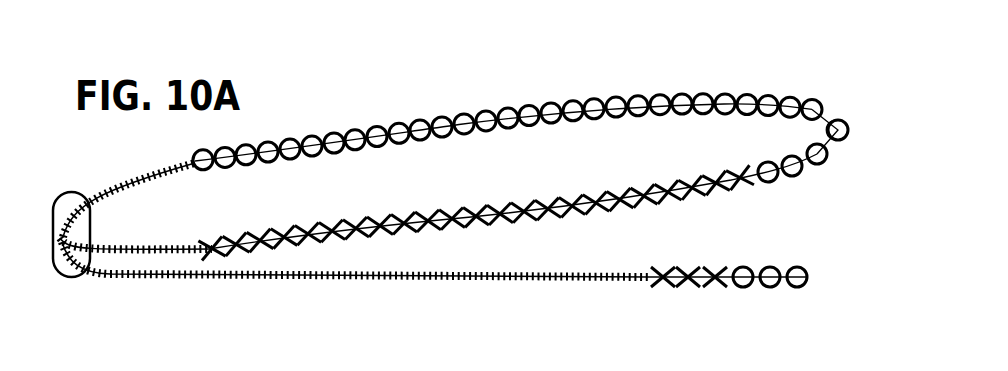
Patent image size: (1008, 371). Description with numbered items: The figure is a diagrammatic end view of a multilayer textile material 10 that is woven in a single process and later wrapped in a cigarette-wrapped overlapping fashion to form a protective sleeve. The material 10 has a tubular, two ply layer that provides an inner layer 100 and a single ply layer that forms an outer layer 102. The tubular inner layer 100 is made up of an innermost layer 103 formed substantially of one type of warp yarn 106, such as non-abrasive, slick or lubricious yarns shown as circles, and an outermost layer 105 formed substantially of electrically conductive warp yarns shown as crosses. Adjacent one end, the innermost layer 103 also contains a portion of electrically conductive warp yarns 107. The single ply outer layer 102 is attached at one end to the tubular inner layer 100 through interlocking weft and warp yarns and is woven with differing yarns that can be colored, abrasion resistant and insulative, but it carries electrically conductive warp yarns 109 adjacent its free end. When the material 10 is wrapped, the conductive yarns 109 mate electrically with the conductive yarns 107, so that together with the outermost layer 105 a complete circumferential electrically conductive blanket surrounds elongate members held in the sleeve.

The textile material 10 is at (845, 96).
The inner layer 100 is at (524, 106).
The outer layer 102 is at (238, 277).
The innermost layer 103 is at (630, 100).
The outermost layer 105 is at (603, 208).
The warp yarn 106 is at (785, 95).
The electrically conductive warp yarns 107 is at (417, 122).
The electrically conductive warp yarns 109 is at (710, 263).